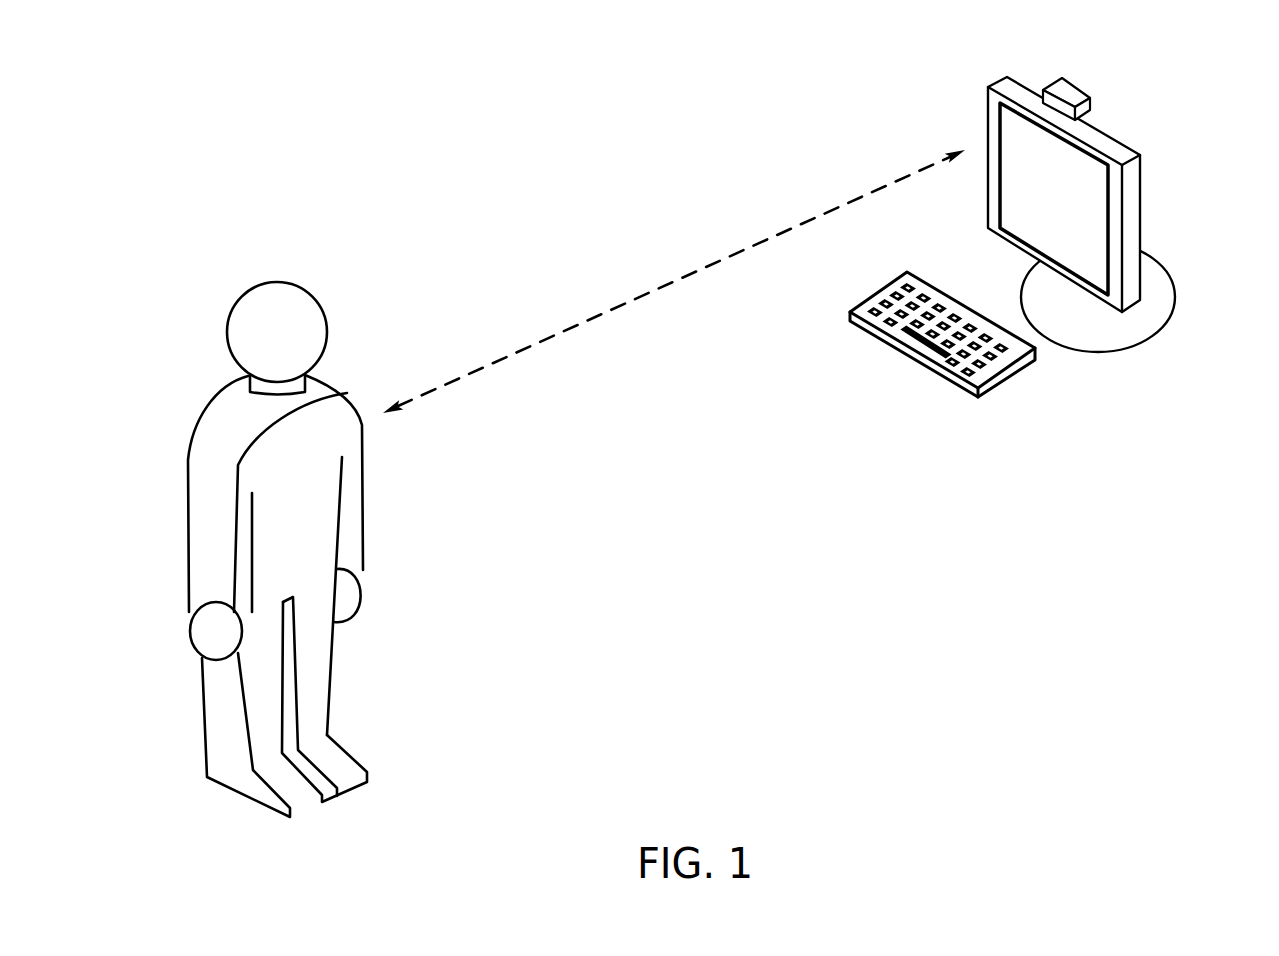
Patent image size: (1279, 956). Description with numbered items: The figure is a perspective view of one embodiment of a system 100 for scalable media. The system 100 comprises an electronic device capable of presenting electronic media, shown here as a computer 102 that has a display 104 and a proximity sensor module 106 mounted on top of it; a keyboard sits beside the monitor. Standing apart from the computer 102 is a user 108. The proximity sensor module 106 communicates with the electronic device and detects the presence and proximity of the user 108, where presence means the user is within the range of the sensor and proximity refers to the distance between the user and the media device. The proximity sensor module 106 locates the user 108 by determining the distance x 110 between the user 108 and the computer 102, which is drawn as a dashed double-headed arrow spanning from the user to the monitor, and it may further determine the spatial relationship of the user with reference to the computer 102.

The system for scalable media 100 is at (285, 98).
The computer 102 is at (1195, 156).
The display 104 is at (1054, 199).
The proximity sensor module 106 is at (1083, 88).
The user 108 is at (270, 280).
The distance x 110 is at (672, 282).